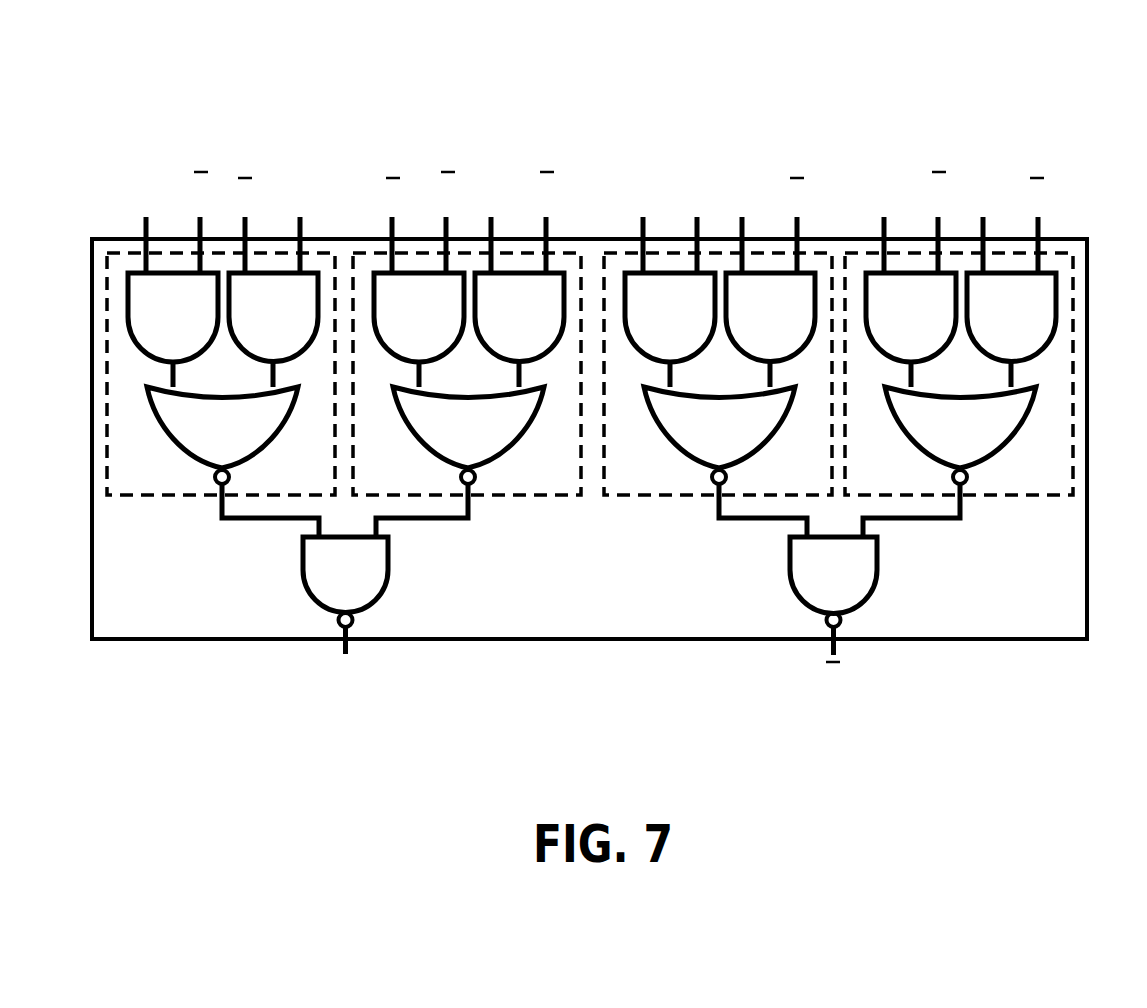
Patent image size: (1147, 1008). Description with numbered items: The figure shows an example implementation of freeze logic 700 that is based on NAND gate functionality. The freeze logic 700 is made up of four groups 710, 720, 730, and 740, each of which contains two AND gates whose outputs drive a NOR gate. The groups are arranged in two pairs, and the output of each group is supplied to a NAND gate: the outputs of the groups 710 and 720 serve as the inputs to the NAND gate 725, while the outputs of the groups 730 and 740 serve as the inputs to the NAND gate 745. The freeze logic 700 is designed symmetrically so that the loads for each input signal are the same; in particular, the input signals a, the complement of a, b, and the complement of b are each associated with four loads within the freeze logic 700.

The freeze logic 700 is at (1071, 237).
The group 710 is at (177, 497).
The group 720 is at (573, 497).
The NAND gate 725 is at (338, 570).
The group 730 is at (700, 498).
The group 740 is at (1060, 497).
The NAND gate 745 is at (825, 575).